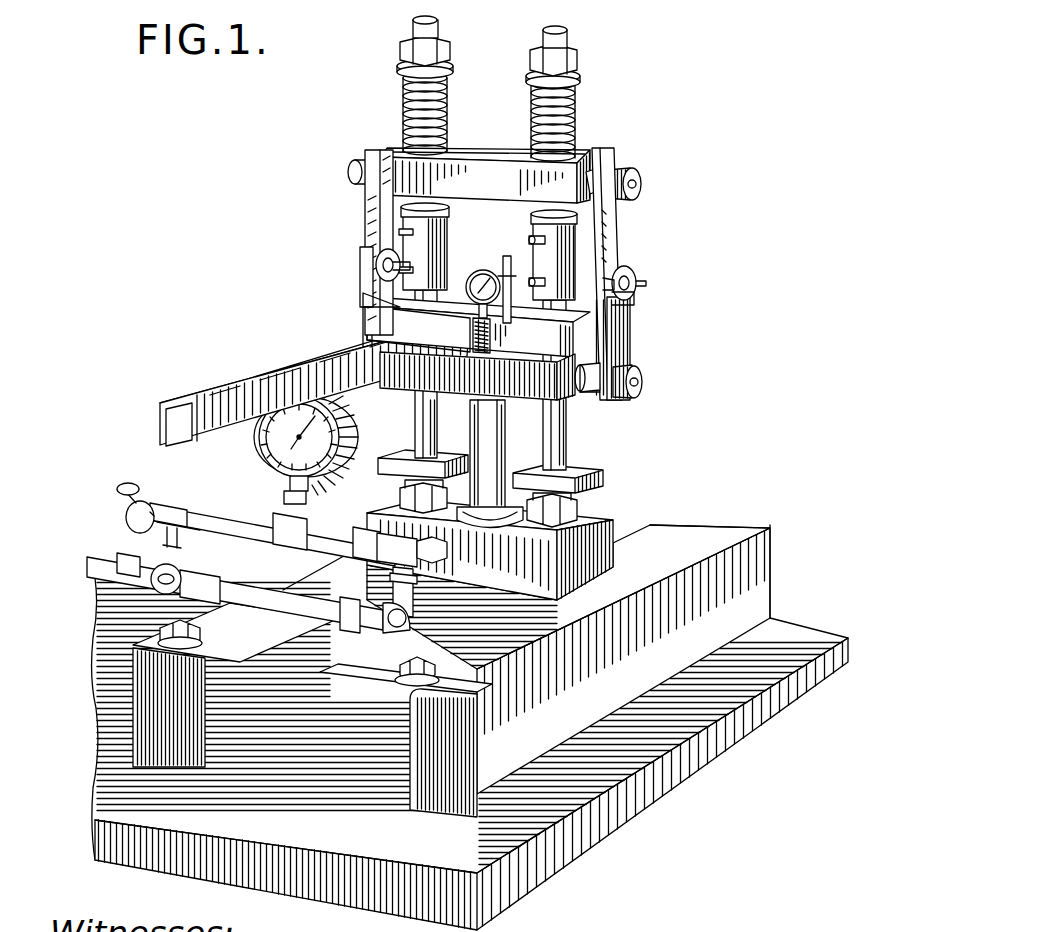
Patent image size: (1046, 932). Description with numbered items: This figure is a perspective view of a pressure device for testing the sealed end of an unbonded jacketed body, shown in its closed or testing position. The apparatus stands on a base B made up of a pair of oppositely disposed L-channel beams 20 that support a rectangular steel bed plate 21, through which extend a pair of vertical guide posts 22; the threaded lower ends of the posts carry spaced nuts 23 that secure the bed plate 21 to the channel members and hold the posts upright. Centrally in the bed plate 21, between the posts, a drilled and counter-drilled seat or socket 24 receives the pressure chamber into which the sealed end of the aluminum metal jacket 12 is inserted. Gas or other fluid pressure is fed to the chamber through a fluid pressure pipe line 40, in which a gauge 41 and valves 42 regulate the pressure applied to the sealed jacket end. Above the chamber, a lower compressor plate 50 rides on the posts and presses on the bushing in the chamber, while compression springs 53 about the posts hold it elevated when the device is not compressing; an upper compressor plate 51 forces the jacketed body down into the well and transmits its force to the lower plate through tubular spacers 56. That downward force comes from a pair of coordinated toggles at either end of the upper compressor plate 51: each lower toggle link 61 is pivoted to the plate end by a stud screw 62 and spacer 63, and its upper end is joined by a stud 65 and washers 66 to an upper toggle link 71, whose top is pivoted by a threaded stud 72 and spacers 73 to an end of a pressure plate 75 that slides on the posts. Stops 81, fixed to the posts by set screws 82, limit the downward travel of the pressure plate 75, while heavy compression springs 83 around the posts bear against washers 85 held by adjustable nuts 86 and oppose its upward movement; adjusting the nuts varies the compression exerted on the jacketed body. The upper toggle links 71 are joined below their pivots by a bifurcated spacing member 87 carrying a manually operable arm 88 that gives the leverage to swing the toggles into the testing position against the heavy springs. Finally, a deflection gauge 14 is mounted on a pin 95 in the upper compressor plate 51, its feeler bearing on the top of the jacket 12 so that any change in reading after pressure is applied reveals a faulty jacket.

The aluminum metal jacket 12 is at (500, 448).
The deflection gauge 14 is at (473, 270).
The L-channel beams 20 is at (247, 656).
The bed plate 21 is at (612, 522).
The guide posts 22 is at (430, 306).
The nuts 23 is at (580, 504).
The seat or socket 24 is at (487, 522).
The fluid pressure pipe line 40 is at (330, 542).
The gauge 41 is at (262, 460).
The valves 42 is at (126, 522).
The lower compressor plate 50 is at (603, 474).
The upper compressor plate 51 is at (583, 393).
The compression springs 53 is at (400, 490).
The tubular spacers 56 is at (413, 424).
The lower toggle link 61 is at (362, 292).
The stud screw 62 is at (632, 398).
The spacer 63 is at (603, 372).
The stud 65 is at (375, 262).
The washers 66 is at (637, 300).
The upper toggle link 71 is at (366, 209).
The threaded stud 72 is at (349, 166).
The spacers 73 is at (592, 183).
The pressure plate 75 is at (592, 158).
The stops 81 is at (538, 254).
The set screws 82 is at (534, 240).
The heavy compression springs 83 is at (405, 96).
The washers 85 is at (400, 67).
The nuts 86 is at (410, 50).
The bifurcated spacing member 87 is at (393, 320).
The manually operable arm 88 is at (220, 388).
The pin 95 is at (496, 335).
The base B is at (375, 706).